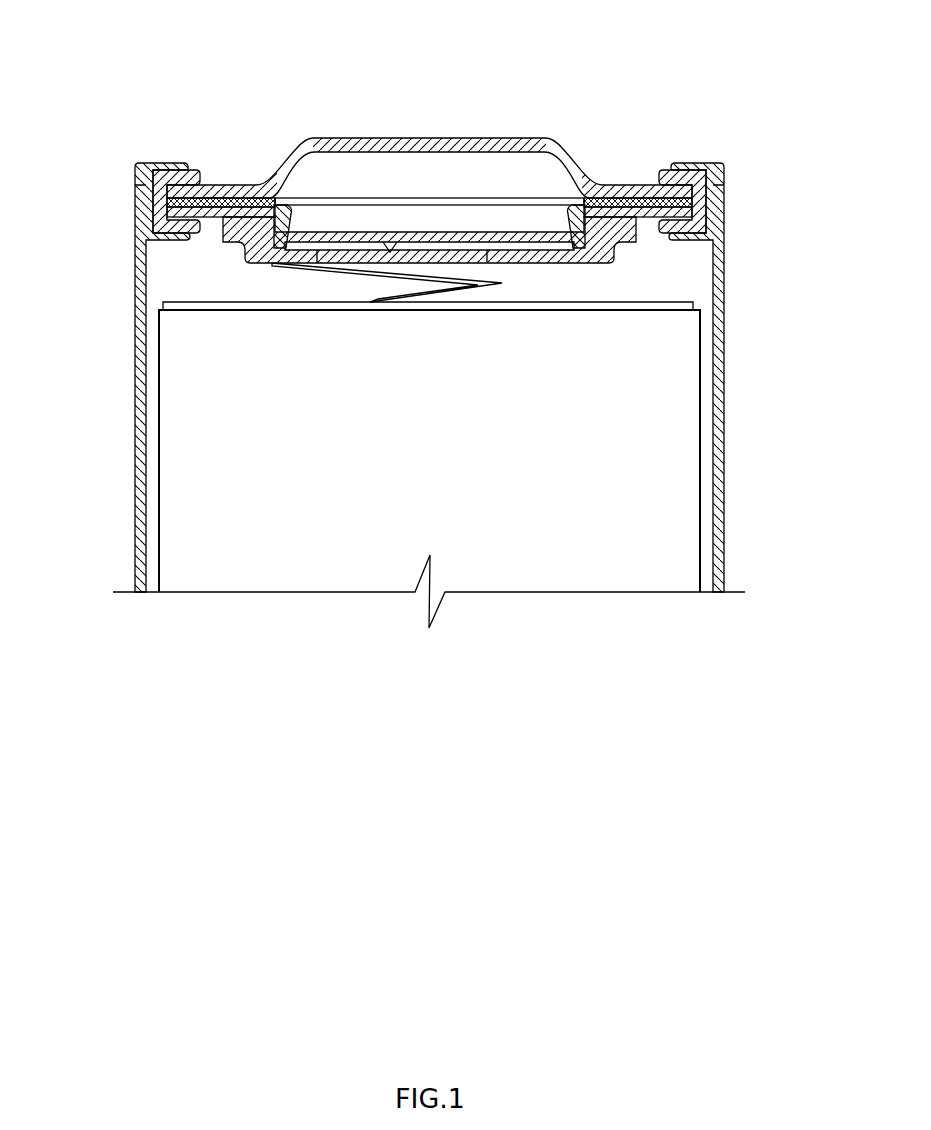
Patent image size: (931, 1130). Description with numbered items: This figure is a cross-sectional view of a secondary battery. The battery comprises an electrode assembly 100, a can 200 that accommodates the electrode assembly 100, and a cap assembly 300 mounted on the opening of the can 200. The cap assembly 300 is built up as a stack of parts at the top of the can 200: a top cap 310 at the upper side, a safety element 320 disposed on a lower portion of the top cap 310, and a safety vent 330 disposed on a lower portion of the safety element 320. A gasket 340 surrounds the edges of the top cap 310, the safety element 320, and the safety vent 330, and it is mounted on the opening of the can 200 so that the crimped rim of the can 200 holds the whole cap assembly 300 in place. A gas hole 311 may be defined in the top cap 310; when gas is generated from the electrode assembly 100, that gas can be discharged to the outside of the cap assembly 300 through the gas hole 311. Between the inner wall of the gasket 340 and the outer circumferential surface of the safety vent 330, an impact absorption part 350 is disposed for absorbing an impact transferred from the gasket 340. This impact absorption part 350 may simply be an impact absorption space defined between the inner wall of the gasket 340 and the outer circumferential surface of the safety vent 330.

The electrode assembly 100 is at (683, 377).
The can 200 is at (726, 284).
The cap assembly 300 is at (673, 77).
The top cap 310 is at (427, 137).
The gas hole 311 is at (270, 167).
The safety element 320 is at (508, 203).
The safety vent 330 is at (590, 213).
The gasket 340 is at (667, 168).
The impact absorption part 350 is at (172, 217).